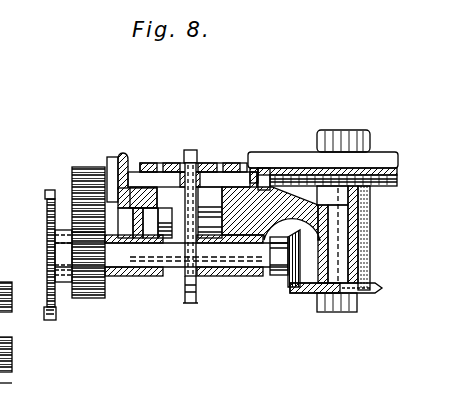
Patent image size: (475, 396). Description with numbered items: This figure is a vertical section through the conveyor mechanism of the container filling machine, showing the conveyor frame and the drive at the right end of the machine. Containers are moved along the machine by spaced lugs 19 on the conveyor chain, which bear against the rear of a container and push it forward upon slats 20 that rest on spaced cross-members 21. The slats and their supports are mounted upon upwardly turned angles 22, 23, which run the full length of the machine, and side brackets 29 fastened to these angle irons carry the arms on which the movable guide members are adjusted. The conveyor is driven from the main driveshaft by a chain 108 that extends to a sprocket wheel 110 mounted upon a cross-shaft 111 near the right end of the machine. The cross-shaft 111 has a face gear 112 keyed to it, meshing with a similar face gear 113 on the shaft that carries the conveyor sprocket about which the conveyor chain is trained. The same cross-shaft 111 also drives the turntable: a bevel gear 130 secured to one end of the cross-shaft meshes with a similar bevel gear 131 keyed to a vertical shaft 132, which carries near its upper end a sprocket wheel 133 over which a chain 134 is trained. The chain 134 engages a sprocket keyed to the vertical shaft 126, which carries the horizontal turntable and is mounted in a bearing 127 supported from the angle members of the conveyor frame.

The spaced lugs 19 is at (193, 150).
The slats 20 is at (152, 162).
The cross-members 21 is at (135, 172).
The upwardly turned angle 22 is at (118, 160).
The upwardly turned angle 23 is at (240, 165).
The side brackets 29 is at (9, 268).
The chain 108 is at (40, 322).
The sprocket wheel 110 is at (47, 252).
The cross-shaft 111 is at (137, 264).
The face gear 112 is at (85, 298).
The face gear 113 is at (72, 175).
The vertical shaft 126 is at (358, 210).
The bearing 127 is at (365, 224).
The bevel gear 130 is at (288, 278).
The bevel gear 131 is at (322, 305).
The vertical shaft 132 is at (355, 262).
The sprocket wheel 133 is at (297, 178).
The chain 134 is at (333, 180).